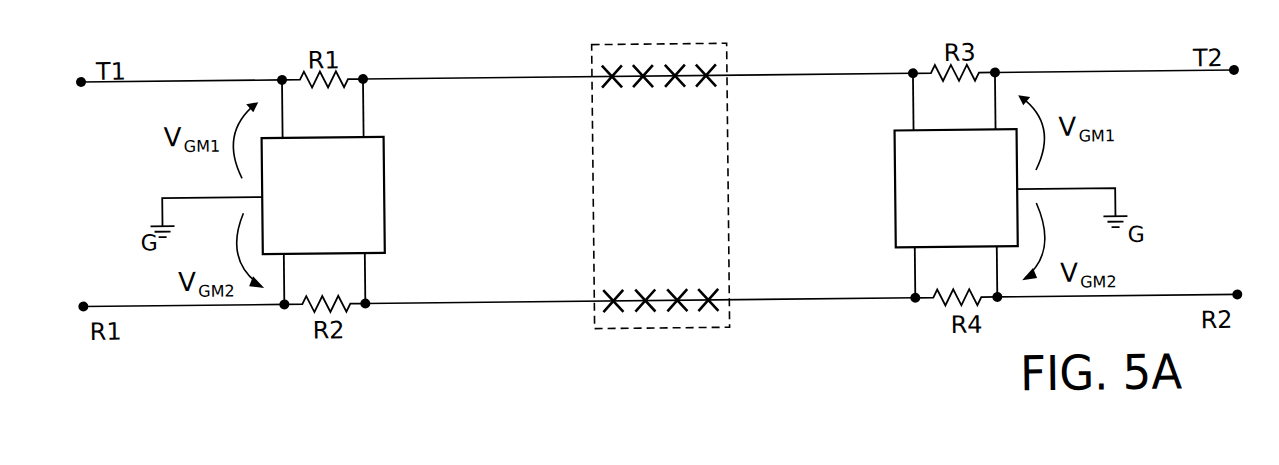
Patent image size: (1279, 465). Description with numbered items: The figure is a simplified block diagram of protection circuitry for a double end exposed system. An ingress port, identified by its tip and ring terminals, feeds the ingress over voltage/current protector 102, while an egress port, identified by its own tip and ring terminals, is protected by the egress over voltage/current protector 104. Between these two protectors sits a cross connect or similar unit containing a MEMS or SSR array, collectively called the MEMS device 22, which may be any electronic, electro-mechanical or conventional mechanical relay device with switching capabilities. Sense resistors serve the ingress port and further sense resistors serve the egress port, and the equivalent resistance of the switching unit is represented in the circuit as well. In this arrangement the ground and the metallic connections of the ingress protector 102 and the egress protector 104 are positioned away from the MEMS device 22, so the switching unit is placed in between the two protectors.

The MEMS device 22 is at (727, 68).
The OVCP-1 102 is at (383, 197).
The OVCP-2 104 is at (894, 196).